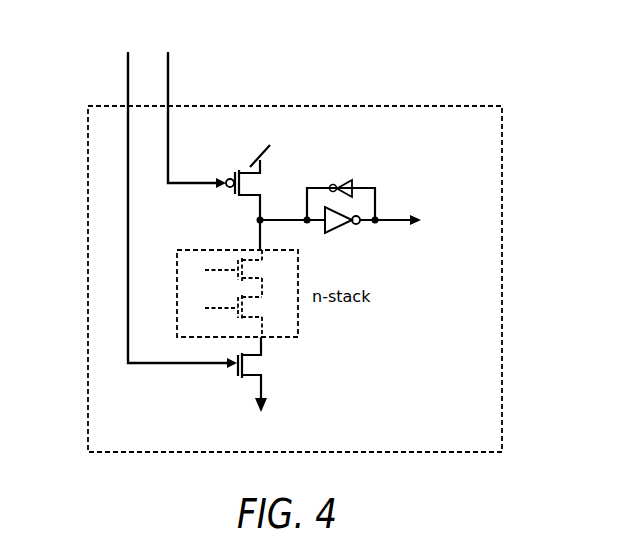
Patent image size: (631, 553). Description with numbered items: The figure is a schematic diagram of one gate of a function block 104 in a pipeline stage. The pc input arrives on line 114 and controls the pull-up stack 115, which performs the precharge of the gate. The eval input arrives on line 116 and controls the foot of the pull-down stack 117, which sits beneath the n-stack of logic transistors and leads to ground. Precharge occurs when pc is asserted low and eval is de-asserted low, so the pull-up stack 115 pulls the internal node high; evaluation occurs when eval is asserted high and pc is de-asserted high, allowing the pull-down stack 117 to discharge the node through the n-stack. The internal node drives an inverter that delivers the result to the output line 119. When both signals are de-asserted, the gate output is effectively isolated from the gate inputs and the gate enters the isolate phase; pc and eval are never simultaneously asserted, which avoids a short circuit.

The function block 104 is at (502, 253).
The pc input line 114 is at (169, 65).
The pull-up stack 115 is at (277, 176).
The eval input line 116 is at (126, 65).
The pull-down stack 117 is at (268, 363).
The output line 119 is at (395, 224).